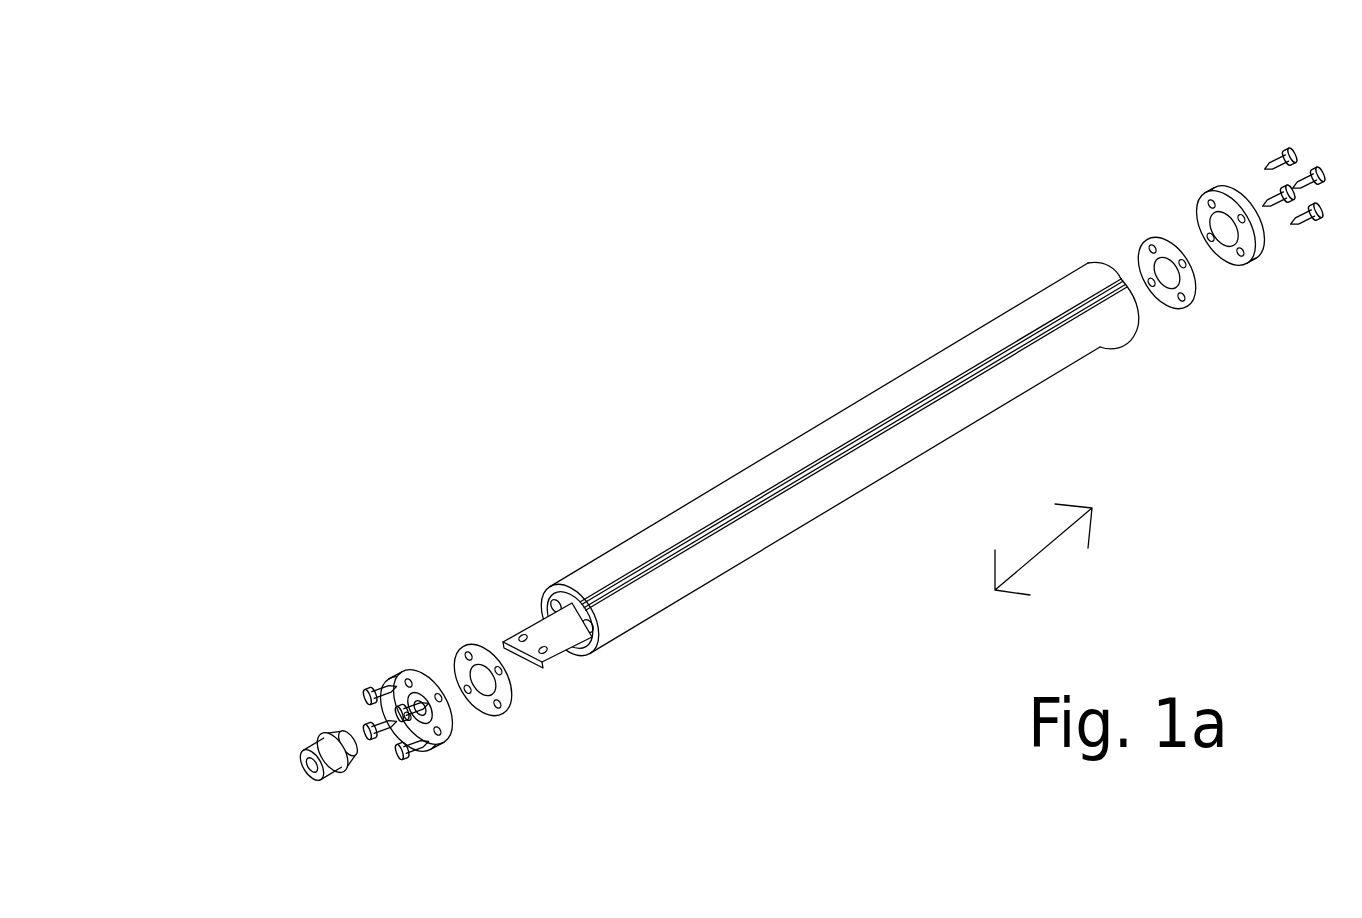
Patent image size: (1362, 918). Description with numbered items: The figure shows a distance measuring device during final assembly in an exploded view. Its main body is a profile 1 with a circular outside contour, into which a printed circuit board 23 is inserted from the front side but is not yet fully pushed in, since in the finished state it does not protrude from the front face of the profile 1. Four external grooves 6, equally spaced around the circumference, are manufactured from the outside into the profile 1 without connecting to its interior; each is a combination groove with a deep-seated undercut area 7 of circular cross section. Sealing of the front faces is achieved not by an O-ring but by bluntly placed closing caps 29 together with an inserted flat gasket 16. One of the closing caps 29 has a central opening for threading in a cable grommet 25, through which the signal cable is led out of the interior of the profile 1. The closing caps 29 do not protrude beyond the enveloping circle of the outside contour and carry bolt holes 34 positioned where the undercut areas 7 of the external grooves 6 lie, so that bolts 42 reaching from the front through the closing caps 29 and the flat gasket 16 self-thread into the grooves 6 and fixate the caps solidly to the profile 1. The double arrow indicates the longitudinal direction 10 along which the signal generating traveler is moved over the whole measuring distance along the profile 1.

The profile 1 is at (833, 463).
The external grooves 6 is at (877, 441).
The undercut area 7 is at (853, 445).
The longitudinal direction 10 is at (1037, 557).
The flat gasket 16 is at (473, 643).
The printed circuit board 23 is at (547, 663).
The cable grommet 25 is at (265, 715).
The closing caps 29 is at (405, 675).
The bolt holes 34 is at (1238, 262).
The bolts 42 is at (405, 753).